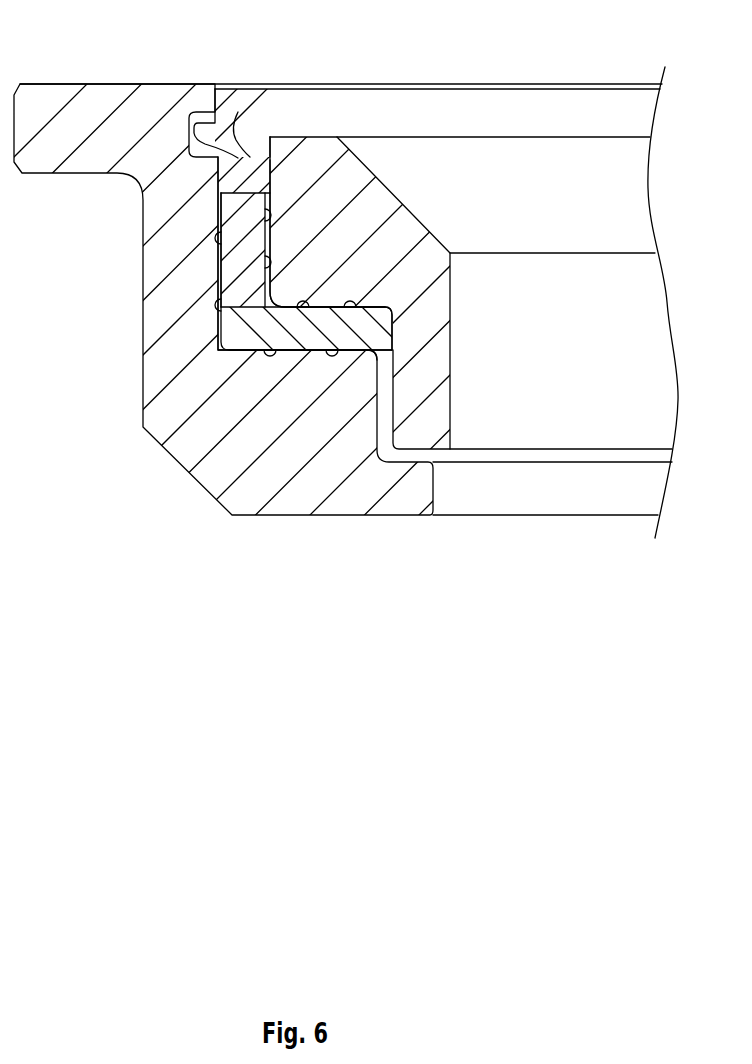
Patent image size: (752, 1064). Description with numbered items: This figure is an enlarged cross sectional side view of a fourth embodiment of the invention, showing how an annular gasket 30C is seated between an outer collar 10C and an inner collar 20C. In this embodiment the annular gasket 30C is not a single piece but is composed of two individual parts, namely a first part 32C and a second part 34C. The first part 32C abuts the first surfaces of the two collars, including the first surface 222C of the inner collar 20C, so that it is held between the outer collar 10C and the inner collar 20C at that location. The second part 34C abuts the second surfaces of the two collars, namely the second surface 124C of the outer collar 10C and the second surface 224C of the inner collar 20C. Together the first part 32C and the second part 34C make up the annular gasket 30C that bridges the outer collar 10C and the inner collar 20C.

The outer collar 10C is at (138, 452).
The second surface of the outer collar 124C is at (244, 352).
The inner collar 20C is at (502, 153).
The first surface of the inner collar 222C is at (243, 165).
The second surface of the inner collar 224C is at (333, 305).
The annular gasket 30C is at (310, 356).
The first part 32C is at (242, 237).
The second part 34C is at (293, 333).